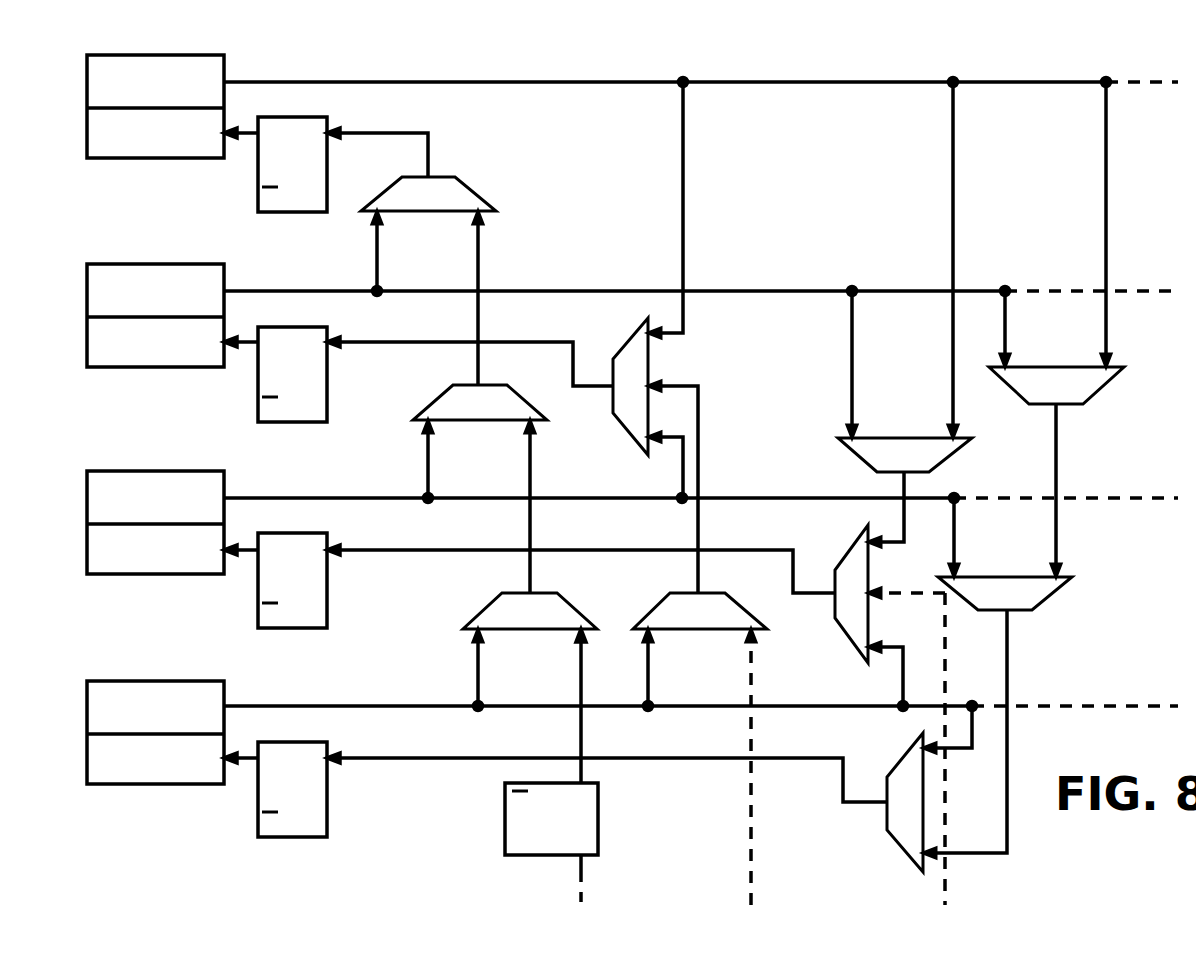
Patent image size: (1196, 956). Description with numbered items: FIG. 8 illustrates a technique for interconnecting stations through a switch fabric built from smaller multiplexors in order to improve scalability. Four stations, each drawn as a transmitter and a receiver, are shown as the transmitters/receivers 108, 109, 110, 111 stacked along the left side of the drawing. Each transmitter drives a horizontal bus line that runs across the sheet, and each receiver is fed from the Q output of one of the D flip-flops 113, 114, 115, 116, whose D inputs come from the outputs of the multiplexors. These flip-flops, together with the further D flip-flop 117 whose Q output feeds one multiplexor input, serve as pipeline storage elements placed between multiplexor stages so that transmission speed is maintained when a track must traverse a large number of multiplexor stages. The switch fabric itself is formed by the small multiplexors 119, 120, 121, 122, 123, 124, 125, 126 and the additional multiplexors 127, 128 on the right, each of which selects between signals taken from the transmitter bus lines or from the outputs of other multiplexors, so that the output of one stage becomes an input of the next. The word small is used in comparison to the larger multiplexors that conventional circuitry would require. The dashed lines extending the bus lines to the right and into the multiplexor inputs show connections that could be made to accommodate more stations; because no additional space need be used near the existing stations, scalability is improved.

The transmitter/receiver 108 is at (137, 55).
The transmitter/receiver 109 is at (137, 264).
The transmitter/receiver 110 is at (137, 471).
The transmitter/receiver 111 is at (137, 681).
The D flip-flop 113 is at (258, 176).
The D flip-flop 114 is at (258, 386).
The D flip-flop 115 is at (258, 596).
The D flip-flop 116 is at (258, 809).
The D flip-flop 117 is at (505, 818).
The small multiplexor 119 is at (468, 186).
The small multiplexor 120 is at (433, 401).
The small multiplexor 121 is at (484, 610).
The small multiplexor 122 is at (630, 343).
The small multiplexor 123 is at (650, 612).
The small multiplexor 124 is at (852, 450).
The small multiplexor 125 is at (844, 636).
The small multiplexor 126 is at (895, 840).
The small multiplexor 127 is at (1098, 384).
The small multiplexor 128 is at (1050, 606).